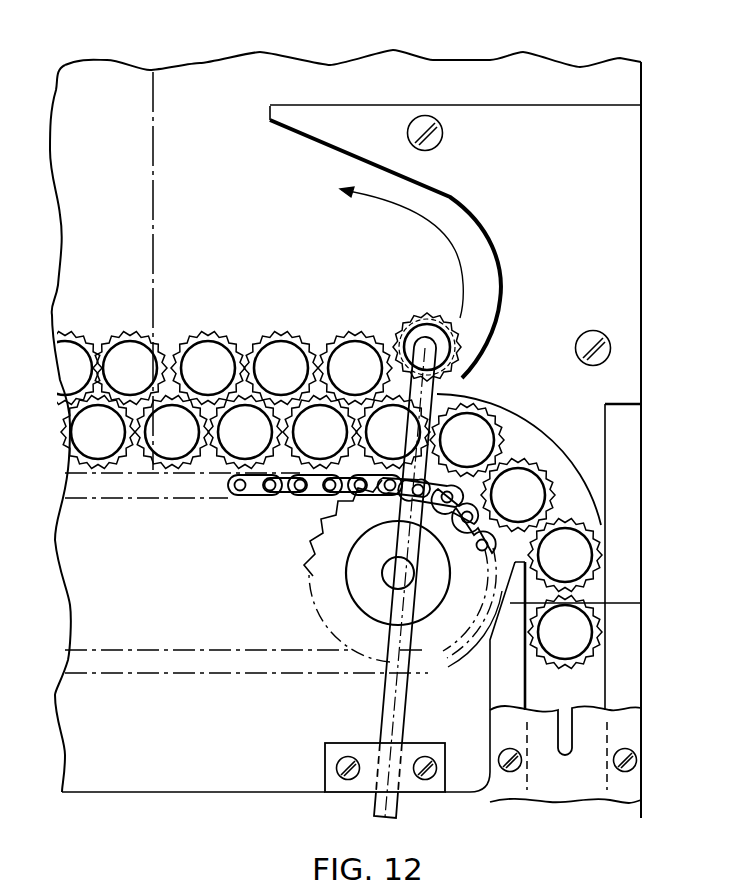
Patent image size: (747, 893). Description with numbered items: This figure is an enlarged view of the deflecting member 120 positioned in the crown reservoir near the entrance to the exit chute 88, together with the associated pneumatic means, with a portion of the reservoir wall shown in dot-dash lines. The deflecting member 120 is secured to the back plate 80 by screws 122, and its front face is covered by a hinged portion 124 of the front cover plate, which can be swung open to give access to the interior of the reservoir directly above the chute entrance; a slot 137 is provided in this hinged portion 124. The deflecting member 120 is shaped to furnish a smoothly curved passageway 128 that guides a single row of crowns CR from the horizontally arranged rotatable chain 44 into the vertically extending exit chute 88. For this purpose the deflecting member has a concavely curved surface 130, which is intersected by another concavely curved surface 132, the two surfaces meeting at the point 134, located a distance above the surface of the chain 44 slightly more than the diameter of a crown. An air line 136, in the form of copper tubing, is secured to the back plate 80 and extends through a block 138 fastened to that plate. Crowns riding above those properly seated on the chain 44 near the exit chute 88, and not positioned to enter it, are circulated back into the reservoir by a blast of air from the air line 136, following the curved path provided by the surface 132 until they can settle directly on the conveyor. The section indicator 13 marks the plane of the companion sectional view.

The back plate 80 is at (300, 58).
The section line 13- 13 is at (443, 167).
The deflecting member 120 is at (623, 265).
The screws 122 is at (433, 137).
The hinged portion 124 is at (153, 175).
The can CR is at (216, 352).
The concavely curved surface 132 is at (497, 248).
The point 134 is at (407, 390).
The slot 137 is at (445, 379).
The concavely curved surface 130 is at (460, 401).
The curved passageway 128 is at (515, 448).
The chain 44 is at (307, 495).
The air line 136 is at (390, 707).
The block 138 is at (338, 755).
The exit chute 88 is at (633, 737).